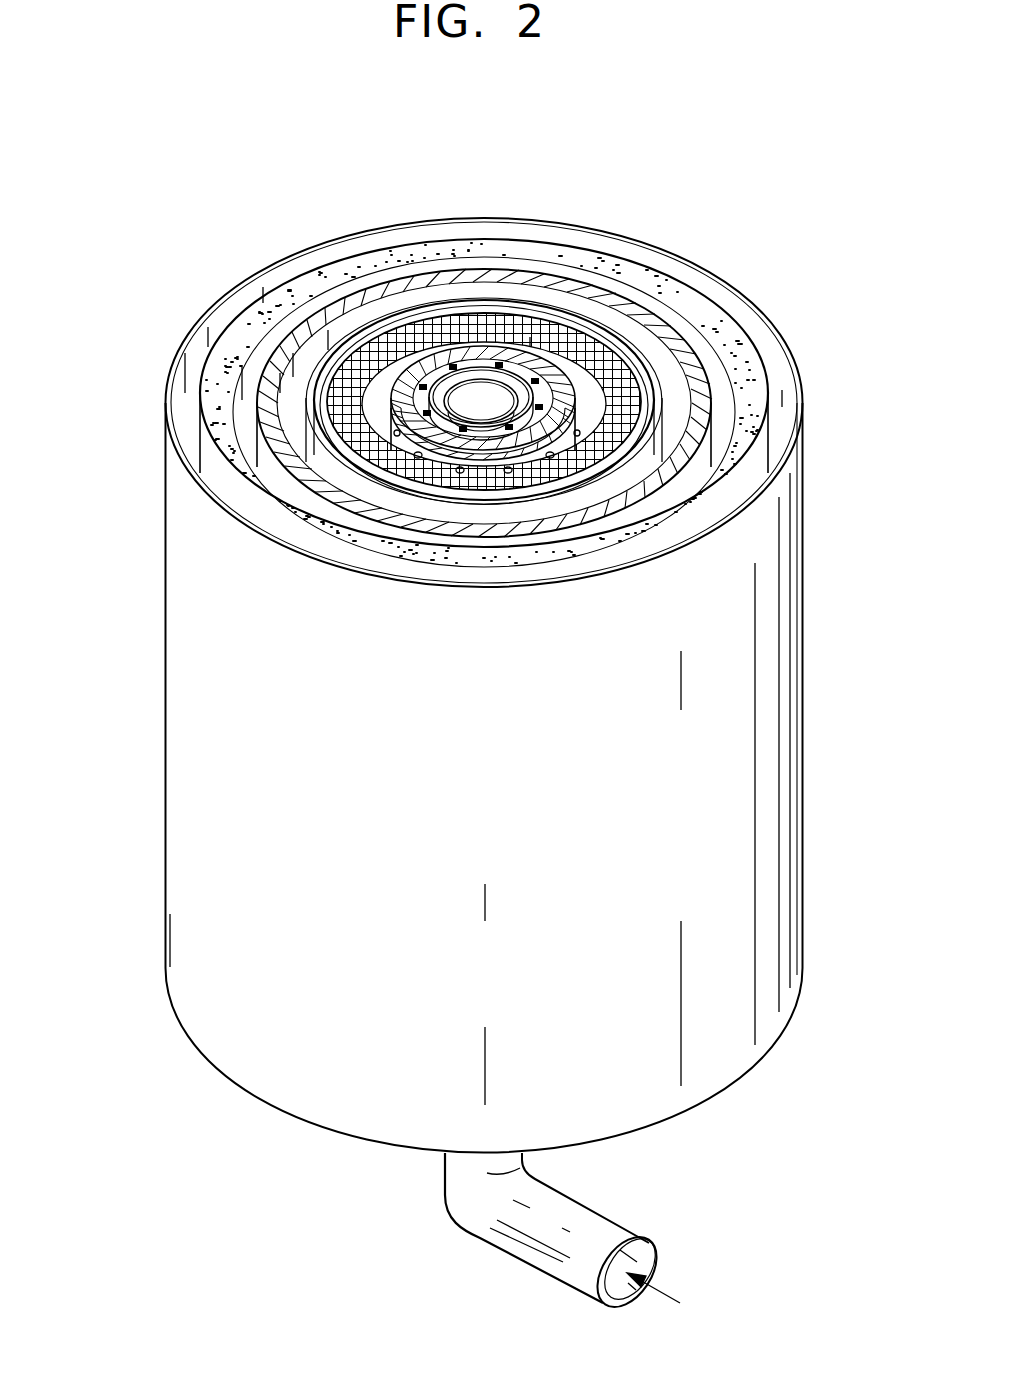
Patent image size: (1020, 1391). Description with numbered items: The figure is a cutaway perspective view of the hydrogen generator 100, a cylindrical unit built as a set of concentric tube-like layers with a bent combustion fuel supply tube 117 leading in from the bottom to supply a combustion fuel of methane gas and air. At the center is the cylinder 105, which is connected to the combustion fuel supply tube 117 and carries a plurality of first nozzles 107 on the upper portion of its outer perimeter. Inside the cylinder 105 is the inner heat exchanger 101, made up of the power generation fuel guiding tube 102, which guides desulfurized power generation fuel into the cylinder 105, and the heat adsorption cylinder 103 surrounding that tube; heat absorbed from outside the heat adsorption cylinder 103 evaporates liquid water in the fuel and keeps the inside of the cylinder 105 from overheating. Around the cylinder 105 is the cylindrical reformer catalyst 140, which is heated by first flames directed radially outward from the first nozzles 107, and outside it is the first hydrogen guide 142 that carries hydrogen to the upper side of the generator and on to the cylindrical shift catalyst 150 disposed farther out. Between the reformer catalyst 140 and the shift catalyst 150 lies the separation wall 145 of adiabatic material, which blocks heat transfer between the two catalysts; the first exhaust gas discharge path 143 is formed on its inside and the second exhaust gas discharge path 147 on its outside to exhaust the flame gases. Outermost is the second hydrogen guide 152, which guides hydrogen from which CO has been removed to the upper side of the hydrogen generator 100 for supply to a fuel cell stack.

The hydrogen generator 100 is at (143, 267).
The inner heat exchanger 101 is at (456, 163).
The power generation fuel guiding tube 102 is at (483, 370).
The heat adsorption cylinder 103 is at (440, 380).
The cylinder 105 is at (528, 347).
The first nozzles 107 is at (552, 367).
The combustion fuel supply tube 117 is at (560, 1278).
The reformer catalyst 140 is at (357, 357).
The first hydrogen guide 142 is at (325, 362).
The first exhaust gas discharge path 143 is at (617, 323).
The separation wall 145 is at (678, 350).
The second exhaust gas discharge path 147 is at (713, 357).
The shift catalyst 150 is at (753, 370).
The second hydrogen guide 152 is at (797, 543).